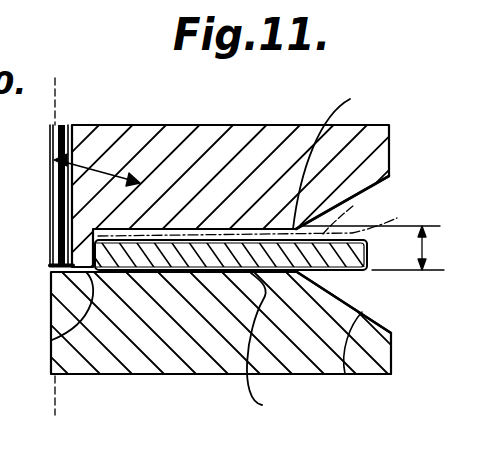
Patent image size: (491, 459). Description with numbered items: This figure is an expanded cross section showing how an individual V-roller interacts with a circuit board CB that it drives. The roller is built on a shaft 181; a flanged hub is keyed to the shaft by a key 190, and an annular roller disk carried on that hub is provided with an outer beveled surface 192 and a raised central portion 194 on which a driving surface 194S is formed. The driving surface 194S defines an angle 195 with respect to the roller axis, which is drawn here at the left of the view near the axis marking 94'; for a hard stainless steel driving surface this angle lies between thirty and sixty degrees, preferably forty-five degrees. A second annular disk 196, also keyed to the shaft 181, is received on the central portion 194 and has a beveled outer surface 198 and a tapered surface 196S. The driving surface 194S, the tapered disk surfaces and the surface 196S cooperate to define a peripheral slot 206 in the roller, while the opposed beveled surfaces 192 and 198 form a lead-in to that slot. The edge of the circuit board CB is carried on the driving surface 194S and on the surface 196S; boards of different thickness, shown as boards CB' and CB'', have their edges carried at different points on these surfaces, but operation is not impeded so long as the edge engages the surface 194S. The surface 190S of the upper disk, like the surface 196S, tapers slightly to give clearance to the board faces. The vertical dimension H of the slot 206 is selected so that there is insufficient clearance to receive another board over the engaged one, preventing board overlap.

The key 190 is at (398, 143).
The curved surface of upper block 190S is at (355, 155).
The outer beveled surface 192 is at (390, 179).
The raised central portion 194 is at (80, 250).
The driving surface 194S is at (46, 310).
The thin layer 94' is at (27, 183).
The shaft 181 is at (63, 127).
The angle 195 is at (113, 168).
The circuit board CB is at (202, 268).
The circuit board of a first thickness CB' is at (269, 217).
The circuit board of a second thickness CB'' is at (362, 210).
The vertical dimension of the slot H is at (419, 250).
The second annular disk 196 is at (147, 382).
The tapered surface of the second disk 196S is at (288, 346).
The peripheral slot 206 is at (306, 273).
The beveled outer surface of the second disk 198 is at (345, 375).